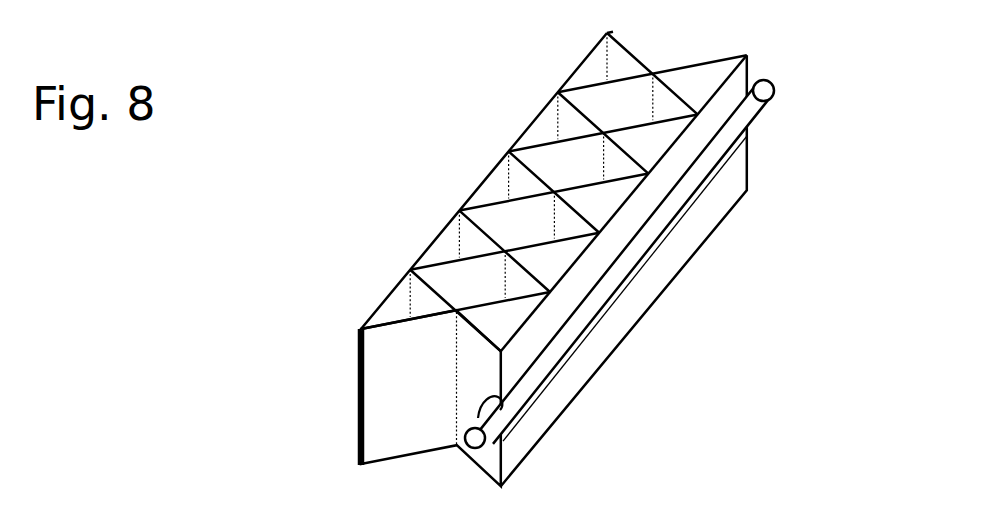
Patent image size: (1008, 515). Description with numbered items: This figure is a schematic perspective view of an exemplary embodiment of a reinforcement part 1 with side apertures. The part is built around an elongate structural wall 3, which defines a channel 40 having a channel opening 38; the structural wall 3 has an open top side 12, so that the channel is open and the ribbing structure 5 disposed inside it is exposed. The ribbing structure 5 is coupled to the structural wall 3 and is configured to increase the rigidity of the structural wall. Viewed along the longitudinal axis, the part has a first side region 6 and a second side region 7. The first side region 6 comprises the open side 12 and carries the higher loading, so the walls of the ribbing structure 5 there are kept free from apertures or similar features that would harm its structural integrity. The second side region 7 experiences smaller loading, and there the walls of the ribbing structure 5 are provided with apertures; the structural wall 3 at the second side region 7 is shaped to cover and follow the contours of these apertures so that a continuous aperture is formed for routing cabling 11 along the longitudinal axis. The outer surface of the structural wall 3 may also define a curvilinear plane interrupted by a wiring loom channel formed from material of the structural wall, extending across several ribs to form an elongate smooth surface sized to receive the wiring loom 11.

The beam profile 1 is at (406, 430).
The structural wall 3 is at (564, 393).
The ribbing structure 5 is at (626, 51).
The first side region 6 is at (520, 108).
The second side region 7 is at (663, 270).
The cabling 11 is at (765, 93).
The open side 12 is at (572, 510).
The channel opening 38 is at (703, 78).
The channel 40 is at (512, 228).